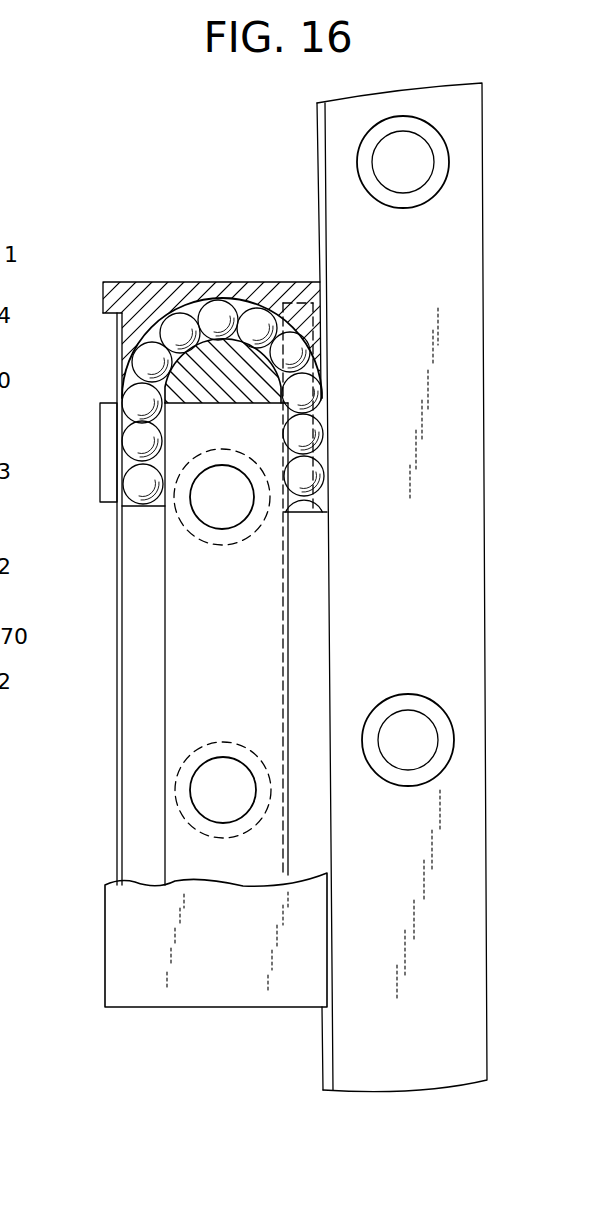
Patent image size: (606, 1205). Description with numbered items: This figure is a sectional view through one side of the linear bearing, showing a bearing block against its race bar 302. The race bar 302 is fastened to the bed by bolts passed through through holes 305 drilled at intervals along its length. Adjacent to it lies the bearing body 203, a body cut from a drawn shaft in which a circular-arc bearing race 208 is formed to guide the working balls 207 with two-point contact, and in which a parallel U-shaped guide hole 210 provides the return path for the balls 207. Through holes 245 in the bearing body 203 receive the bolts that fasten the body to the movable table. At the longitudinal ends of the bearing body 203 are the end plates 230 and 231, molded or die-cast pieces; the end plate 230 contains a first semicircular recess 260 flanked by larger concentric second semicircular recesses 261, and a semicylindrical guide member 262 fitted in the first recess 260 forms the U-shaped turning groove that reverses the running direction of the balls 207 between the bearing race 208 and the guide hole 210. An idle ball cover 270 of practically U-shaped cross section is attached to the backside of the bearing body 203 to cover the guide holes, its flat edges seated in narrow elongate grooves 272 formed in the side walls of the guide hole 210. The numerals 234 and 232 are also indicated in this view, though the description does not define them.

The race bar 302 is at (335, 177).
The through hole 305 is at (410, 185).
The end plate 230 is at (122, 274).
The narrow elongate groove 272 is at (103, 310).
The hatched body portion 234 is at (320, 357).
The second semicircular recess 261 is at (170, 326).
The first semicircular recess 260 is at (213, 325).
The semicylindrical guide member 262 is at (253, 338).
The bearing race 208 is at (300, 445).
The working ball 207 is at (303, 478).
The idle ball cover 270 is at (109, 389).
The side plate 232 is at (118, 390).
The U-shaped guide hole 210 is at (118, 458).
The bearing body 203 is at (110, 480).
The through hole 245 is at (250, 493).
The end plate 231 is at (202, 1007).